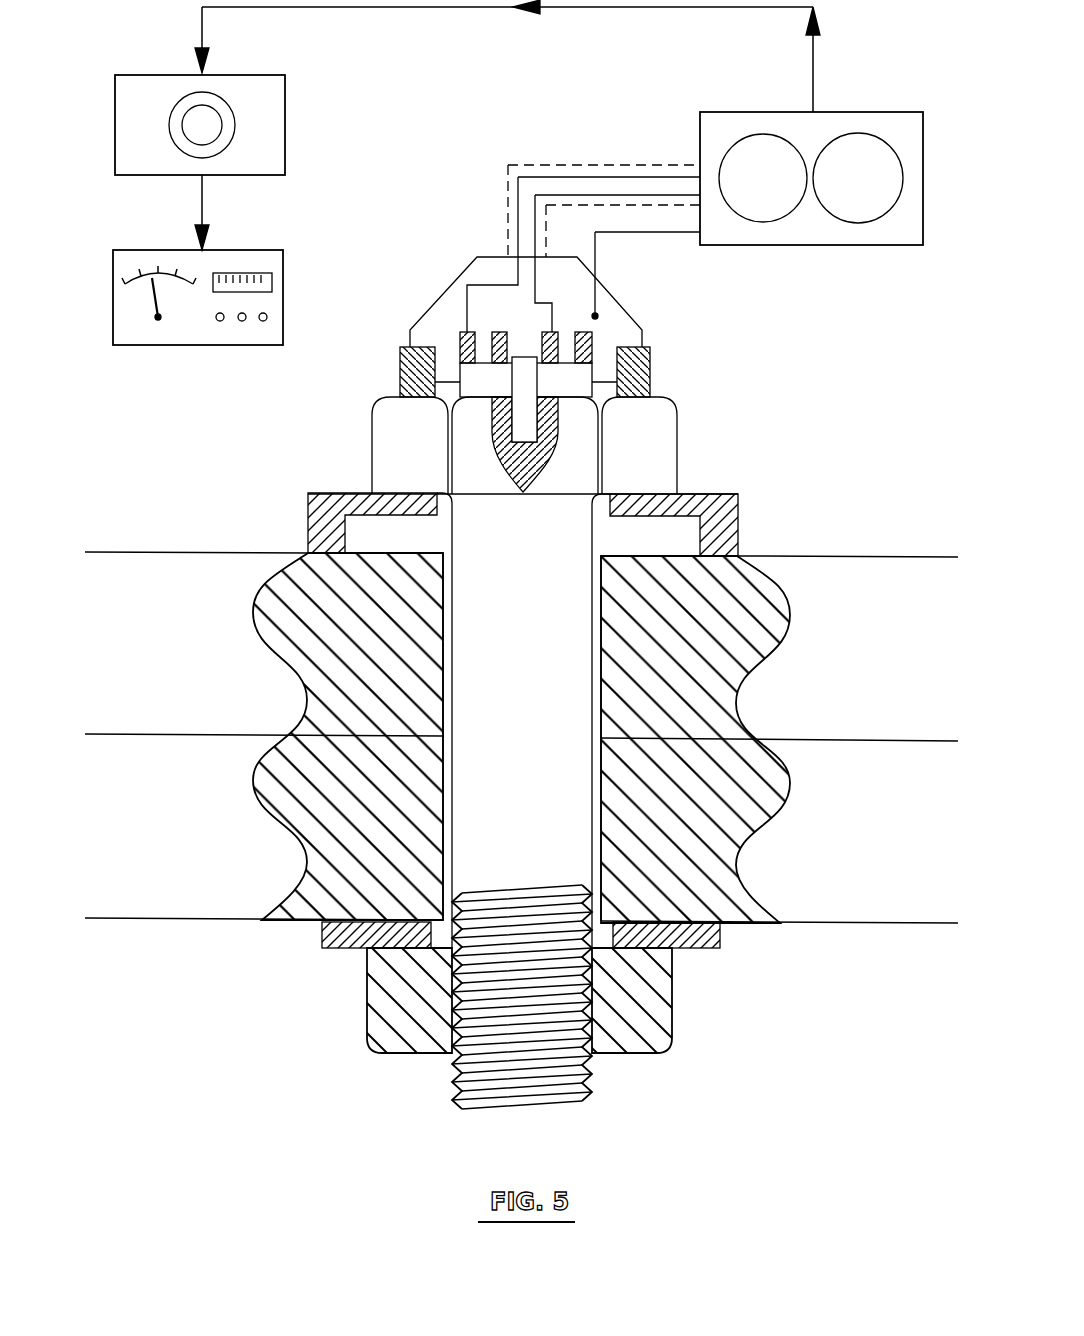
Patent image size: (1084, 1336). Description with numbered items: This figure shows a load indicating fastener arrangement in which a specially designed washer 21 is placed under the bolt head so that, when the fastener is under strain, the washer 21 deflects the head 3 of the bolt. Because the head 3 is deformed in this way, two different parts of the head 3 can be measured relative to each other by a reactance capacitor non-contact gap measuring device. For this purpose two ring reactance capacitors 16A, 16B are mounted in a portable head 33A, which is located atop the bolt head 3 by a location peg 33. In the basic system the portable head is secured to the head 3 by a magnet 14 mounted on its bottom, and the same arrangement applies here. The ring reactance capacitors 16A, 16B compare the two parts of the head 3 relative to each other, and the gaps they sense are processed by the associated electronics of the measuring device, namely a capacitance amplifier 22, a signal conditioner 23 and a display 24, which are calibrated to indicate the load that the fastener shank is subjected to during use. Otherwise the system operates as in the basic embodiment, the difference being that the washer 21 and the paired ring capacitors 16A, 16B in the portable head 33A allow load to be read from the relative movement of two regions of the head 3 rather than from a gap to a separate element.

The head 3 is at (658, 420).
The magnet 14 is at (650, 377).
The ring reactance capacitor 16A is at (593, 340).
The ring reactance capacitor 16B is at (503, 330).
The specially designed washer 21 is at (740, 523).
The capacitance amplifier 22 is at (698, 125).
The signal conditioner 23 is at (287, 90).
The display 24 is at (285, 263).
The location peg 33 is at (523, 422).
The portable head 33A is at (458, 273).